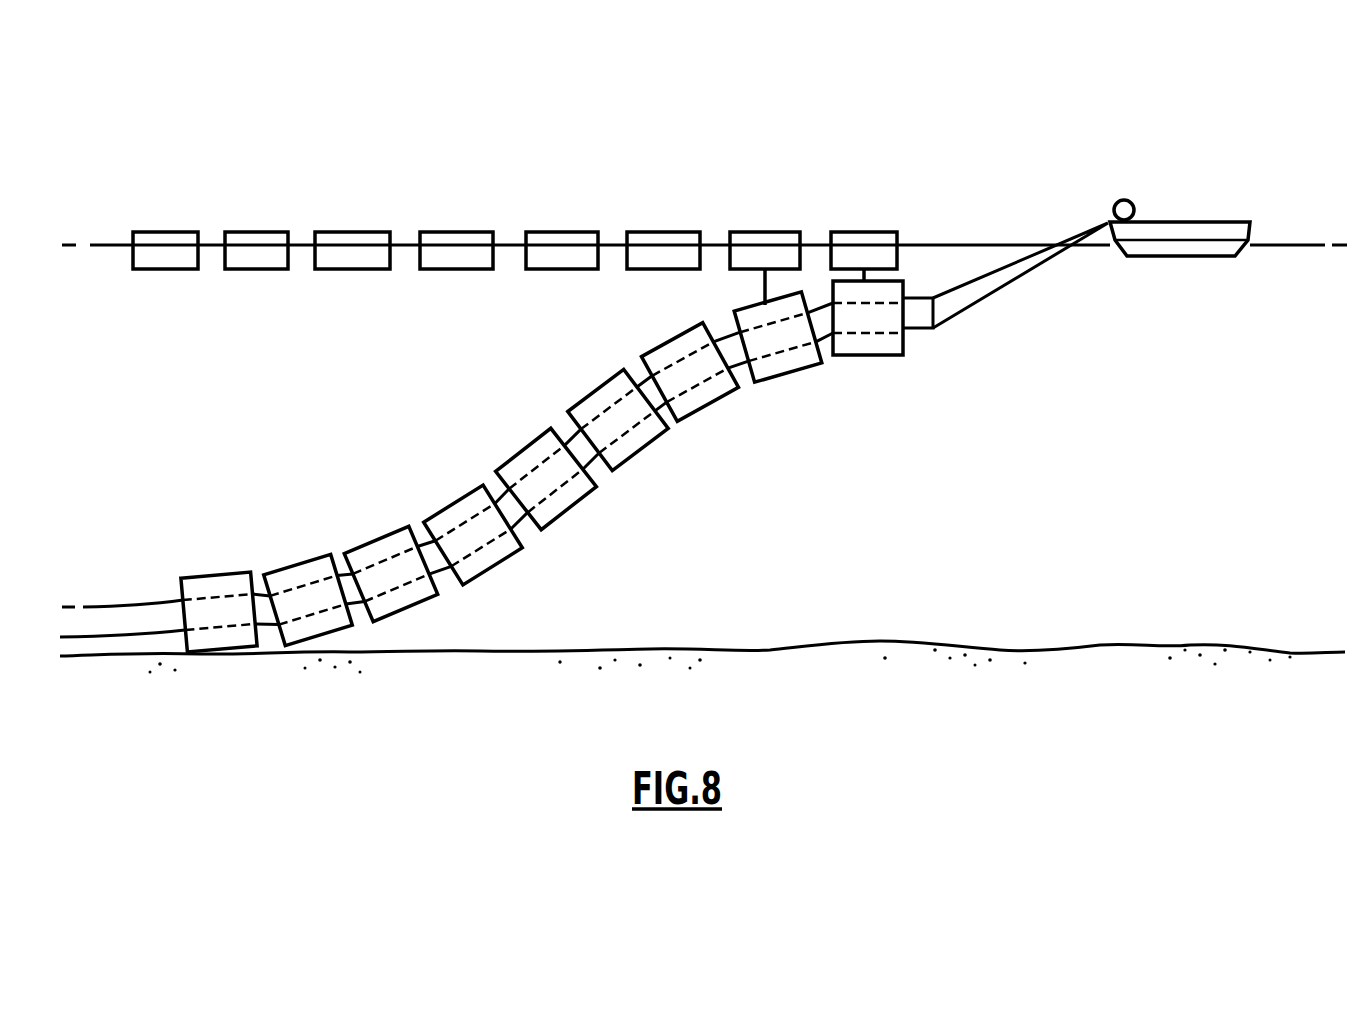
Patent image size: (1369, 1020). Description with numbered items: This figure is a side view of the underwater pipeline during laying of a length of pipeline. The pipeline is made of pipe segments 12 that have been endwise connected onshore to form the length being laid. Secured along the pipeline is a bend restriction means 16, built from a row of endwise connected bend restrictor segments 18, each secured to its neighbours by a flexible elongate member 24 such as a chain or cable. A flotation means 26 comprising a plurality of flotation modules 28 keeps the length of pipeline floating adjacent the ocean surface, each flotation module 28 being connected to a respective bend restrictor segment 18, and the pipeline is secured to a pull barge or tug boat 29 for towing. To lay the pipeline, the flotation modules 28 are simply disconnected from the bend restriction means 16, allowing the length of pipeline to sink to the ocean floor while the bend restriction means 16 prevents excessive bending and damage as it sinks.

The pipe segment 12 is at (142, 622).
The bend restriction means 16 is at (557, 466).
The bend restrictor segment 18 is at (205, 580).
The flexible elongate member 24 is at (262, 606).
The flotation means 26 is at (357, 214).
The flotation module 28 is at (582, 240).
The pull barge or tug boat 29 is at (1196, 258).